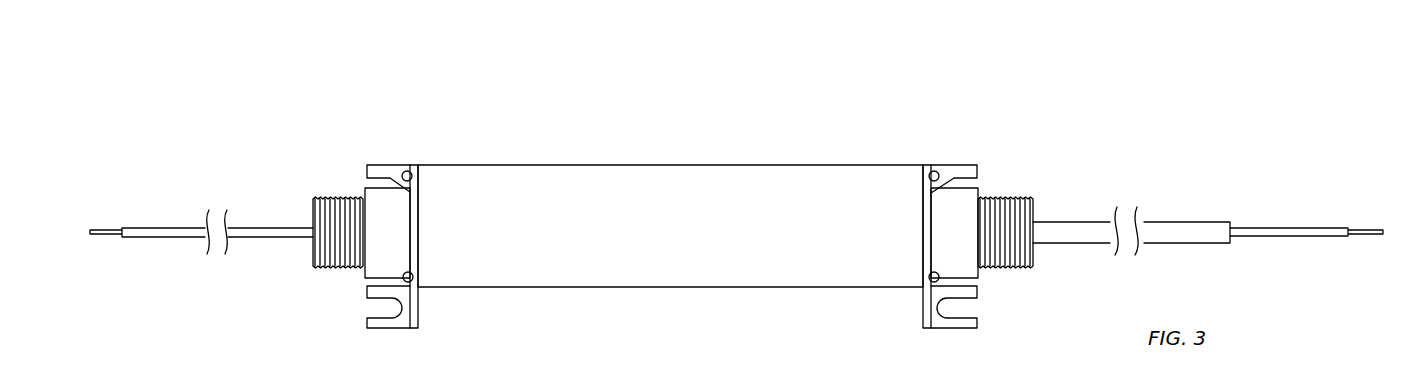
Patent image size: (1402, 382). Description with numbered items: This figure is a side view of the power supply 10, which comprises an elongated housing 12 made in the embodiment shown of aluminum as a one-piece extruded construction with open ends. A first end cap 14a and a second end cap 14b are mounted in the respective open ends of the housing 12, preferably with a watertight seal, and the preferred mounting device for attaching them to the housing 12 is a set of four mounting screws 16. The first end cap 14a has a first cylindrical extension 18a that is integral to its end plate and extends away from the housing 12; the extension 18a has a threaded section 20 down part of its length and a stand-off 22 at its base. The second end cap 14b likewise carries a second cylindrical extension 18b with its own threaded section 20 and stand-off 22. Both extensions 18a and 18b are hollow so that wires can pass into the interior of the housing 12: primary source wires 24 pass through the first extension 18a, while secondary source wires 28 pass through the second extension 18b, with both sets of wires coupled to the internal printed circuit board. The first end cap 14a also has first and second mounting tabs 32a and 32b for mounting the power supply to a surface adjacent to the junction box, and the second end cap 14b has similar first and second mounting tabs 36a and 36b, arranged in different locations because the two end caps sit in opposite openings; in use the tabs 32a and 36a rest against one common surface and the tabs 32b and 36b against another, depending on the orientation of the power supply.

The power supply 10 is at (232, 90).
The housing 12 is at (690, 165).
The first end cap 14a is at (413, 152).
The second end cap 14b is at (926, 152).
The mounting screws 16 is at (412, 276).
The first cylindrical extension 18a is at (656, 220).
The second cylindrical extension 18b is at (710, 238).
The threaded section 20 is at (313, 262).
The stand-off 22 is at (365, 278).
The primary source wires 24 is at (141, 228).
The secondary source wires 28 is at (1207, 222).
The first mounting tab 32a is at (375, 328).
The second mounting tab 32b is at (375, 165).
The first mounting tab 36a is at (965, 328).
The second mounting tab 36b is at (967, 165).